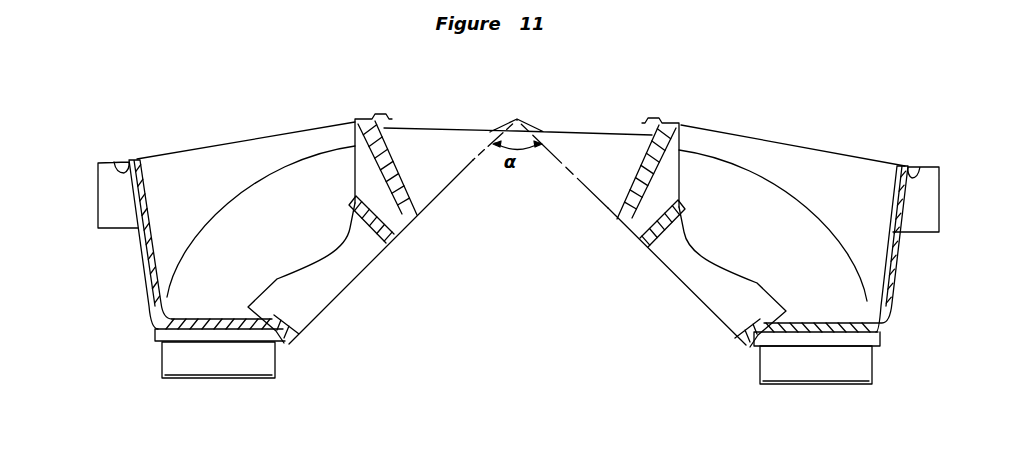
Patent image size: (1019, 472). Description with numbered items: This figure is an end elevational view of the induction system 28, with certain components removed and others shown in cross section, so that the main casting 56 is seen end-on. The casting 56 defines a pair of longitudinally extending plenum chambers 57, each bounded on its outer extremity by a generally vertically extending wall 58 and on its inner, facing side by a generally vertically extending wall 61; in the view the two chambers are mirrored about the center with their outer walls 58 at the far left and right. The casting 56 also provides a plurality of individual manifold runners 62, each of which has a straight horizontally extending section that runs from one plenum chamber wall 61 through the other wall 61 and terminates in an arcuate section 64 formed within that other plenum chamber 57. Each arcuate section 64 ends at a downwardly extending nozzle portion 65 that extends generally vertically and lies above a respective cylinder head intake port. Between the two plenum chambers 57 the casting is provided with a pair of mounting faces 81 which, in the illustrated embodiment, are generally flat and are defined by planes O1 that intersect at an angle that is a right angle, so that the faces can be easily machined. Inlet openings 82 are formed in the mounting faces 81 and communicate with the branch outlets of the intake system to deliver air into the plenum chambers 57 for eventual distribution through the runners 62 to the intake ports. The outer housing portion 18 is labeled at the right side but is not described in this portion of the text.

The housing wall 18 is at (906, 200).
The induction system 28 is at (688, 100).
The main casting 56 is at (950, 199).
The plenum chamber 57 is at (341, 169).
The outer wall 58 is at (131, 200).
The inner wall 61 is at (372, 119).
The manifold runner 62 is at (462, 143).
The arcuate section 64 is at (245, 208).
The nozzle portion 65 is at (225, 363).
The mounting face 81 is at (327, 305).
The inlet opening 82 is at (373, 237).
The plane O1 is at (458, 176).